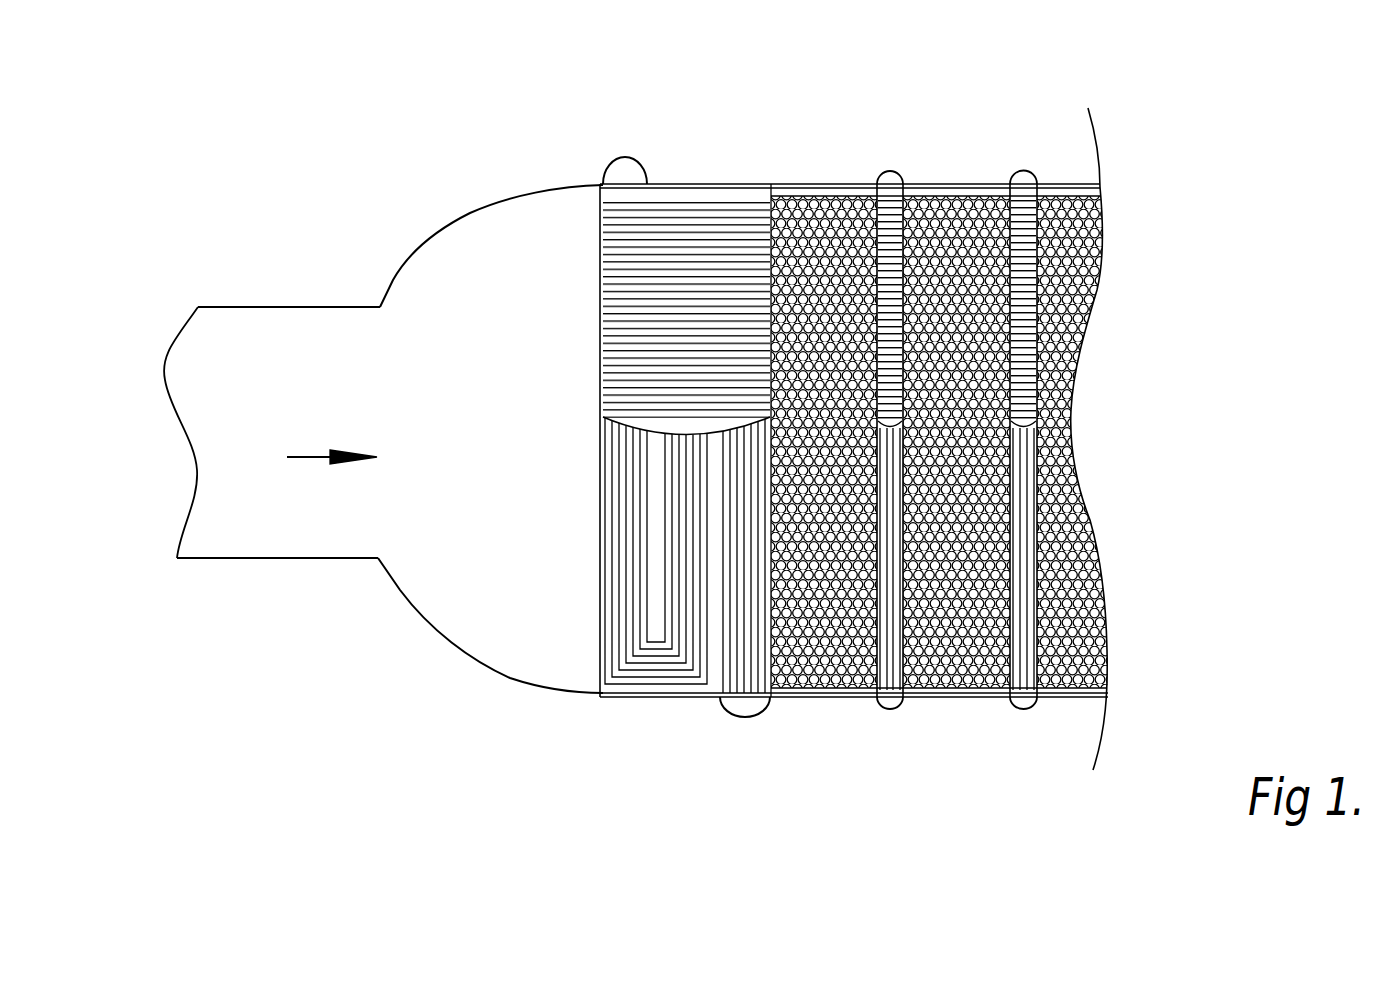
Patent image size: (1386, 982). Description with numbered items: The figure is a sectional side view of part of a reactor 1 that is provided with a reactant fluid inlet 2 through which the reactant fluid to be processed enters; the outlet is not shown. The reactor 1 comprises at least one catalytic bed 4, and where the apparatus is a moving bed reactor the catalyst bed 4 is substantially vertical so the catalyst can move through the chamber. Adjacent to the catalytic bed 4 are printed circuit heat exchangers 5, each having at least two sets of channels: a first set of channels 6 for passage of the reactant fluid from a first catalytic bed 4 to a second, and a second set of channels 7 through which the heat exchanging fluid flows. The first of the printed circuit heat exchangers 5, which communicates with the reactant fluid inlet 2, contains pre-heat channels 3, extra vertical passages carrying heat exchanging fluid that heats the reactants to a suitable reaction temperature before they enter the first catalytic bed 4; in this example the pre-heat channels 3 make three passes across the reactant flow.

The reactor 1 is at (523, 615).
The reactant fluid inlet 2 is at (223, 438).
The pre-heat channels 3 is at (676, 658).
The catalytic bed 4 is at (822, 222).
The printed circuit heat exchangers 5 is at (1029, 519).
The first set of channels 6 is at (1040, 303).
The second set of channels 7 is at (1030, 527).